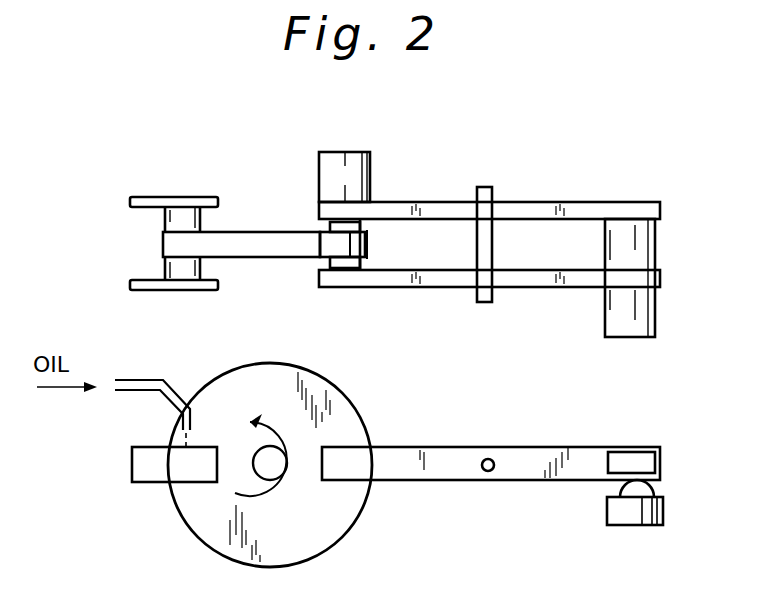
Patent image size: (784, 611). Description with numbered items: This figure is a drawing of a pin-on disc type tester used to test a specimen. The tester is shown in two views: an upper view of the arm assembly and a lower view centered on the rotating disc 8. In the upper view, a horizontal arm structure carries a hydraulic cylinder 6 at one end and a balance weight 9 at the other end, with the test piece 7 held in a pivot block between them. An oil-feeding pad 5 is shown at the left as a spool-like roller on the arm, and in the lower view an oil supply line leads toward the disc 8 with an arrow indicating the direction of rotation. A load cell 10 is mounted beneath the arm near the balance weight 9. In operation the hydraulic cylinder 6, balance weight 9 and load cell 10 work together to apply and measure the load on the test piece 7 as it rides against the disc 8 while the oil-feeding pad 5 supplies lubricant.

The oil-feeding pad 5 is at (163, 261).
The hydraulic cylinder 6 is at (365, 158).
The test piece 7 is at (338, 263).
The disc 8 is at (352, 405).
The balance weight 9 is at (655, 307).
The load cell 10 is at (607, 510).